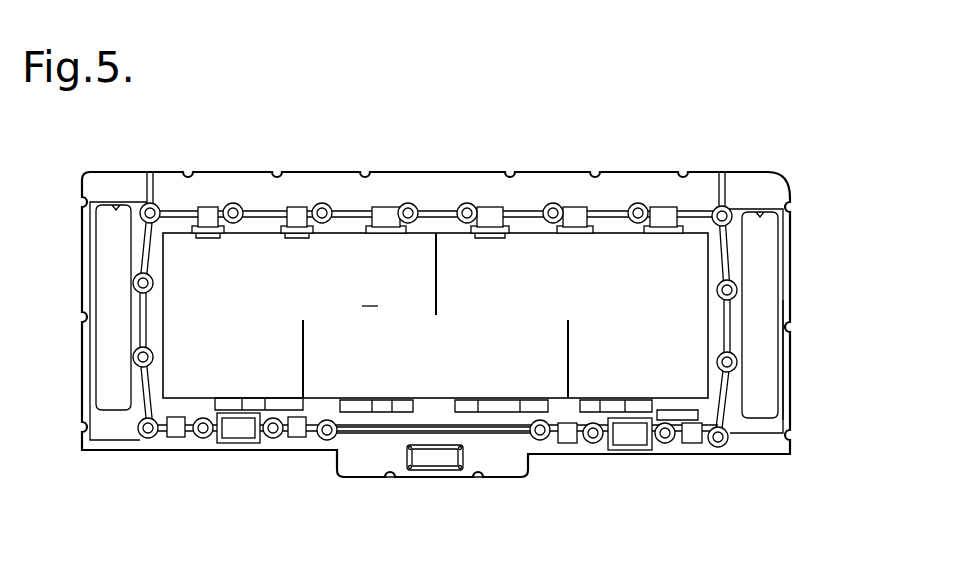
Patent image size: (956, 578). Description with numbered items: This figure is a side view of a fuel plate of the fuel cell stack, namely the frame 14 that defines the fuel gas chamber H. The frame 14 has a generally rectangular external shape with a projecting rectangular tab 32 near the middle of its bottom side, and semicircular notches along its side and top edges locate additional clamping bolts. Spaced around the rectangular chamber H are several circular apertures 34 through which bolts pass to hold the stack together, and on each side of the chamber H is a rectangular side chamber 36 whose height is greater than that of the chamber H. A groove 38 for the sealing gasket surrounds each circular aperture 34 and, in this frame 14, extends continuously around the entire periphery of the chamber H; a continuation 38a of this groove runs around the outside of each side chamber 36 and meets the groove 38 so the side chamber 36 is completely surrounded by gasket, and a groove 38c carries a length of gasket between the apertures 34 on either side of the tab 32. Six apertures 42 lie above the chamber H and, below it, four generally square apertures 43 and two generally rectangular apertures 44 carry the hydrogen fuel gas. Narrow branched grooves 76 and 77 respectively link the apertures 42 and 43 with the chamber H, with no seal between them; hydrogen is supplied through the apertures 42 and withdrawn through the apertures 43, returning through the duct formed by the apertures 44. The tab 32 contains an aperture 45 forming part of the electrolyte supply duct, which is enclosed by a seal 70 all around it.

The frame 14 is at (467, 167).
The projecting rectangular tab 32 is at (505, 468).
The circular apertures 34 is at (204, 438).
The rectangular side chambers 36 is at (110, 303).
The groove 38 is at (630, 451).
The continuation of the groove 38a is at (778, 378).
The groove 38c is at (372, 434).
The apertures 42 is at (212, 206).
The generally square apertures 43 is at (182, 438).
The generally rectangular apertures 44 is at (238, 443).
The aperture 45 is at (443, 461).
The seal 70 is at (418, 472).
The narrow branched grooves 76 is at (306, 236).
The narrow branched grooves 77 is at (243, 407).